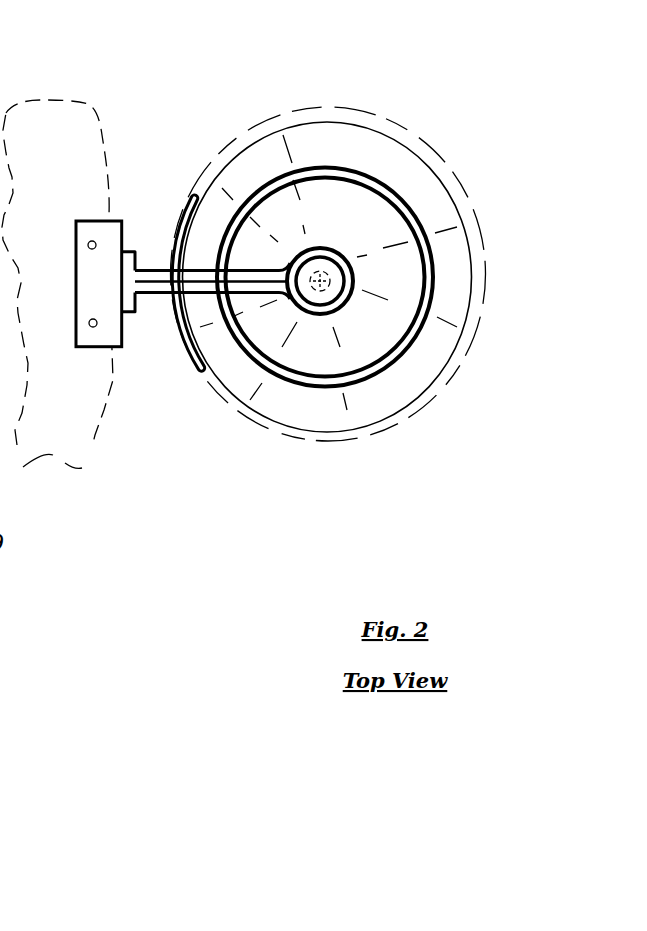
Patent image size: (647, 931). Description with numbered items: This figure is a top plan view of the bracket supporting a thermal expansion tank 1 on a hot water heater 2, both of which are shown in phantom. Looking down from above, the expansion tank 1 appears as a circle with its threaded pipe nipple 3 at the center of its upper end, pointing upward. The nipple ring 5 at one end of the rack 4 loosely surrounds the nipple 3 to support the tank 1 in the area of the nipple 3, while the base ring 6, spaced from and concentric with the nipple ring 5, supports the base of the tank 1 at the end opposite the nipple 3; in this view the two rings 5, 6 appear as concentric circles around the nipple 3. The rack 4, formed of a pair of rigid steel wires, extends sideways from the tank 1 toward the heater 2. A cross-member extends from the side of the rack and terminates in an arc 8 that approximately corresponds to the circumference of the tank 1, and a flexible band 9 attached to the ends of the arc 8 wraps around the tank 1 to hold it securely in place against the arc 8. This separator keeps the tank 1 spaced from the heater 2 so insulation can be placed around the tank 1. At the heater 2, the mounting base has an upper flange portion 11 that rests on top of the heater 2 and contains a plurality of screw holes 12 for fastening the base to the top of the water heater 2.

The thermal expansion tank 1 is at (435, 193).
The hot water heater 2 is at (42, 120).
The threaded pipe nipple 3 is at (323, 278).
The rack 4 is at (155, 290).
The nipple ring 5 is at (320, 276).
The base ring 6 is at (402, 354).
The arc 8 is at (179, 342).
The flexible band 9 is at (472, 314).
The upper flange portion 11 is at (98, 338).
The screw holes 12 is at (95, 320).